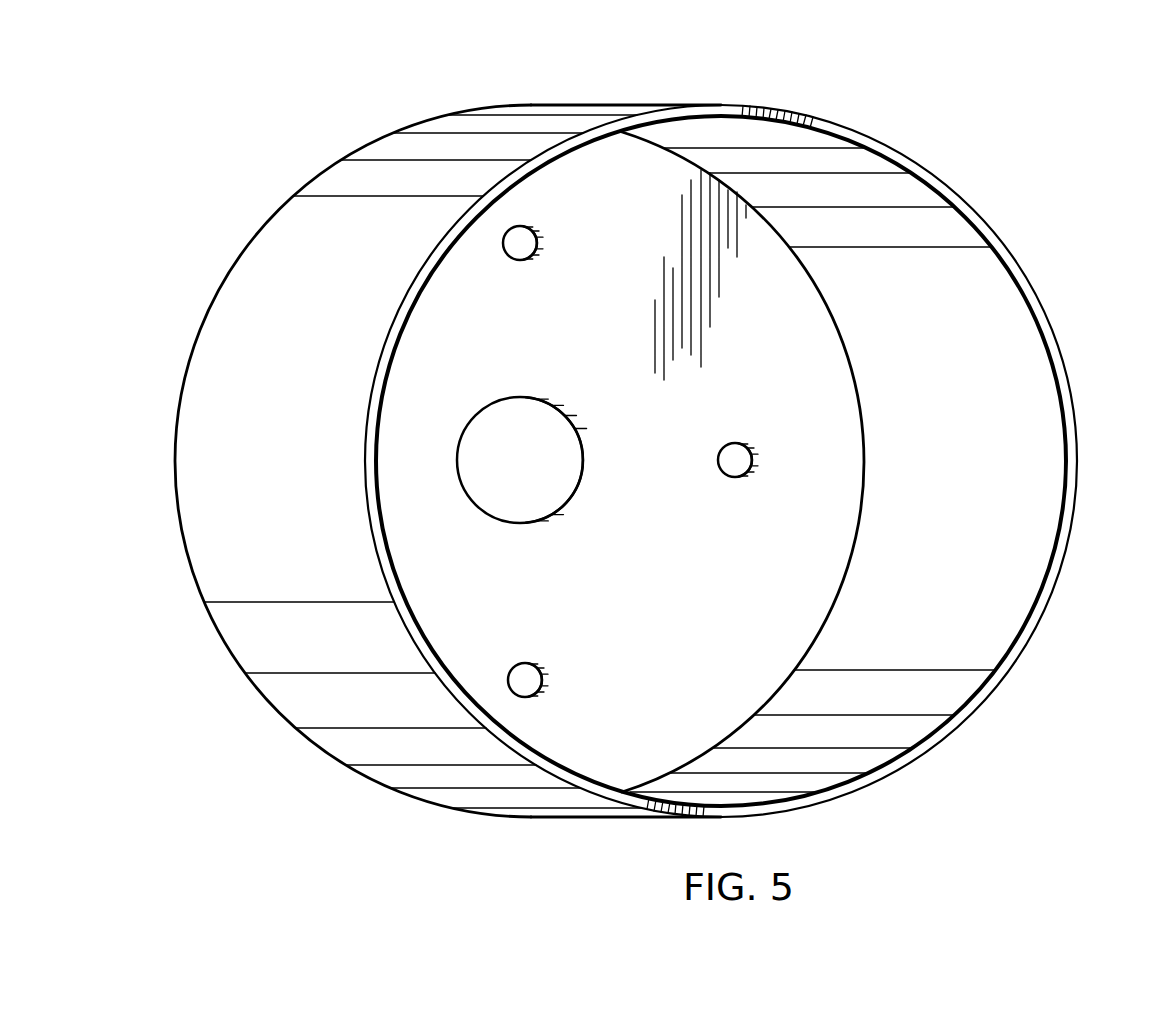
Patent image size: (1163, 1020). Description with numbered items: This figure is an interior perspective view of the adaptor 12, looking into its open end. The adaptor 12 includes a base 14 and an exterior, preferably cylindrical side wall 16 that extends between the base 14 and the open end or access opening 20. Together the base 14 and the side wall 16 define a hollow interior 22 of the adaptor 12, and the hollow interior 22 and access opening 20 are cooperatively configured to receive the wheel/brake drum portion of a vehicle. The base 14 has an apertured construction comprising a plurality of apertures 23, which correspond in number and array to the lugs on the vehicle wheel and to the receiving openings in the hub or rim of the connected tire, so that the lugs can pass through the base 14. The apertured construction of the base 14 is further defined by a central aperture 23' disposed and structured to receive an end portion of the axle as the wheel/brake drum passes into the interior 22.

The adaptor 12 is at (997, 162).
The base 14 is at (743, 462).
The side wall 16 is at (295, 275).
The access opening 20 is at (953, 725).
The hollow interior 22 is at (812, 470).
The apertures 23 is at (667, 491).
The central aperture 23' is at (551, 481).